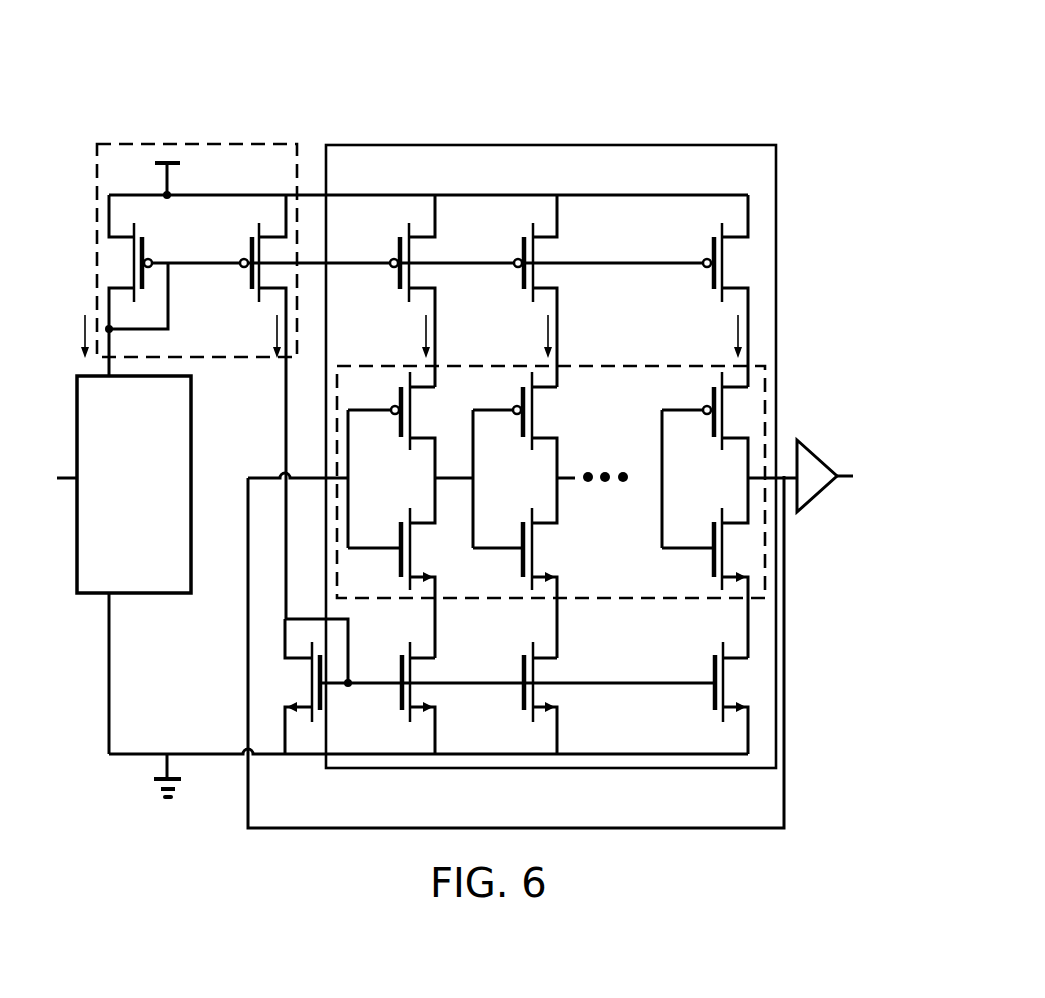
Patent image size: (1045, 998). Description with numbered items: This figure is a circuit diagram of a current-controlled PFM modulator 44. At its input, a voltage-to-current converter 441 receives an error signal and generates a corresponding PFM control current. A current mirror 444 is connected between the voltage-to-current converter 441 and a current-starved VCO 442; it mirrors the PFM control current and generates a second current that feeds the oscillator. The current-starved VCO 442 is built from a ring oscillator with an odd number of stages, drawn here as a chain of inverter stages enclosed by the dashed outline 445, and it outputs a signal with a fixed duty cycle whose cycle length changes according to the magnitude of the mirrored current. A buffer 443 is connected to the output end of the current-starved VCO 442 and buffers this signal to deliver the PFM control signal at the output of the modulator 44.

The current-controlled PFM modulator 44 is at (503, 91).
The voltage-to-current converter 441 is at (77, 435).
The current-starved VCO 442 is at (754, 143).
The buffer 443 is at (818, 455).
The current mirror 444 is at (265, 143).
The inverter chain 445 is at (765, 364).